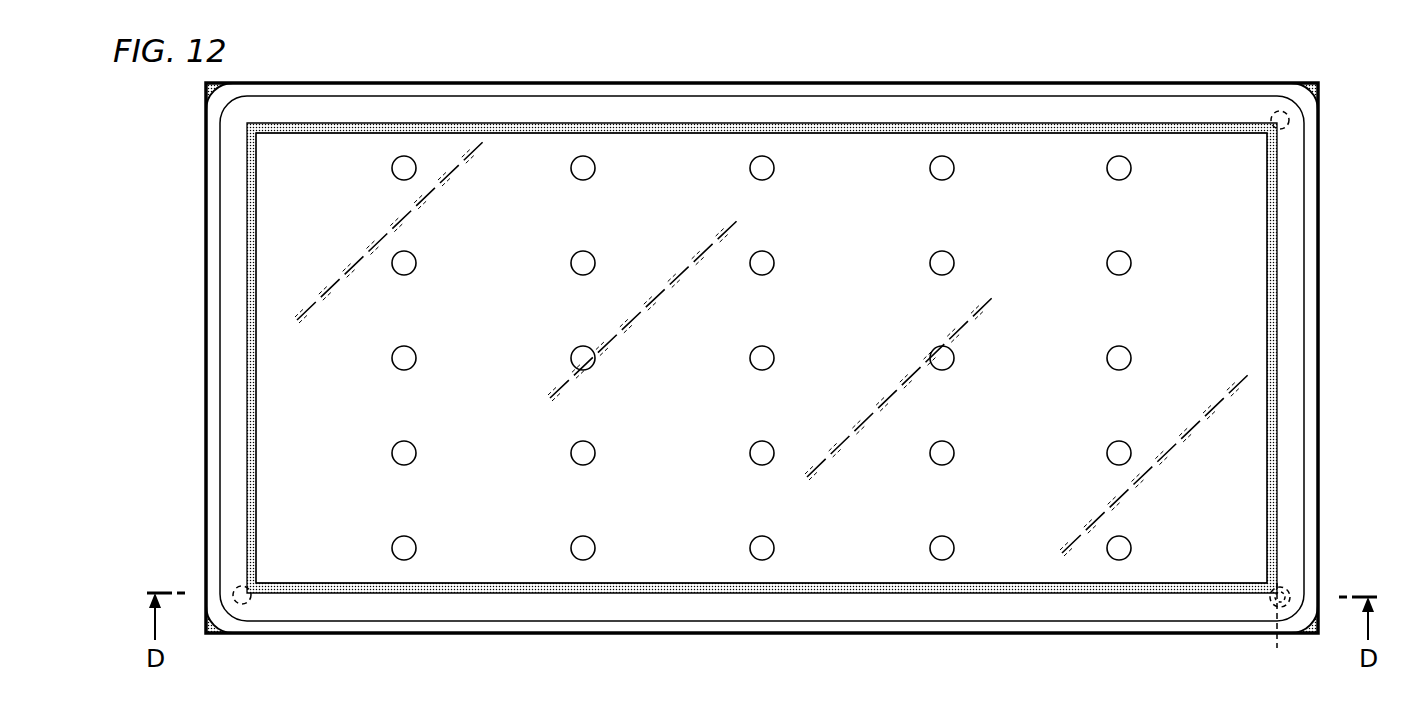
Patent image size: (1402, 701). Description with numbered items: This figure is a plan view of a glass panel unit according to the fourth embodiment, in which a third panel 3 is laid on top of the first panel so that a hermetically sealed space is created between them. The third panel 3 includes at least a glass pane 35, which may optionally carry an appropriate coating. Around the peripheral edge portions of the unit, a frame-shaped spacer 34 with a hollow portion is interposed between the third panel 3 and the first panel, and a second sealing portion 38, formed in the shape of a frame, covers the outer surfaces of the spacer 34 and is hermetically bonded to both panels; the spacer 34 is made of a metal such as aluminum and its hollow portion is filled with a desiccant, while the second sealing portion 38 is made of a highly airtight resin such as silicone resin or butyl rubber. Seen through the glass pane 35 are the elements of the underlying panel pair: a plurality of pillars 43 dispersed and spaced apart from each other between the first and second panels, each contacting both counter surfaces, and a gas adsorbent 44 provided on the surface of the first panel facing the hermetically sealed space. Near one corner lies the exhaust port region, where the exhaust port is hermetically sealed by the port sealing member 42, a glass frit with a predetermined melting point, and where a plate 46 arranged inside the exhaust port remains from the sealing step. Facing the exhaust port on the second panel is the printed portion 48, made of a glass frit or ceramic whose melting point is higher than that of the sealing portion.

The third panel 3 is at (340, 155).
The glass pane 35 is at (527, 158).
The pillars 43 is at (588, 171).
The gas adsorbent 44 is at (1279, 111).
The printed portion 48 is at (1270, 287).
The second sealing portion 38 is at (1310, 263).
The spacer 34 is at (1292, 369).
The port sealing member 42 is at (1273, 590).
The plate 46 is at (1276, 631).